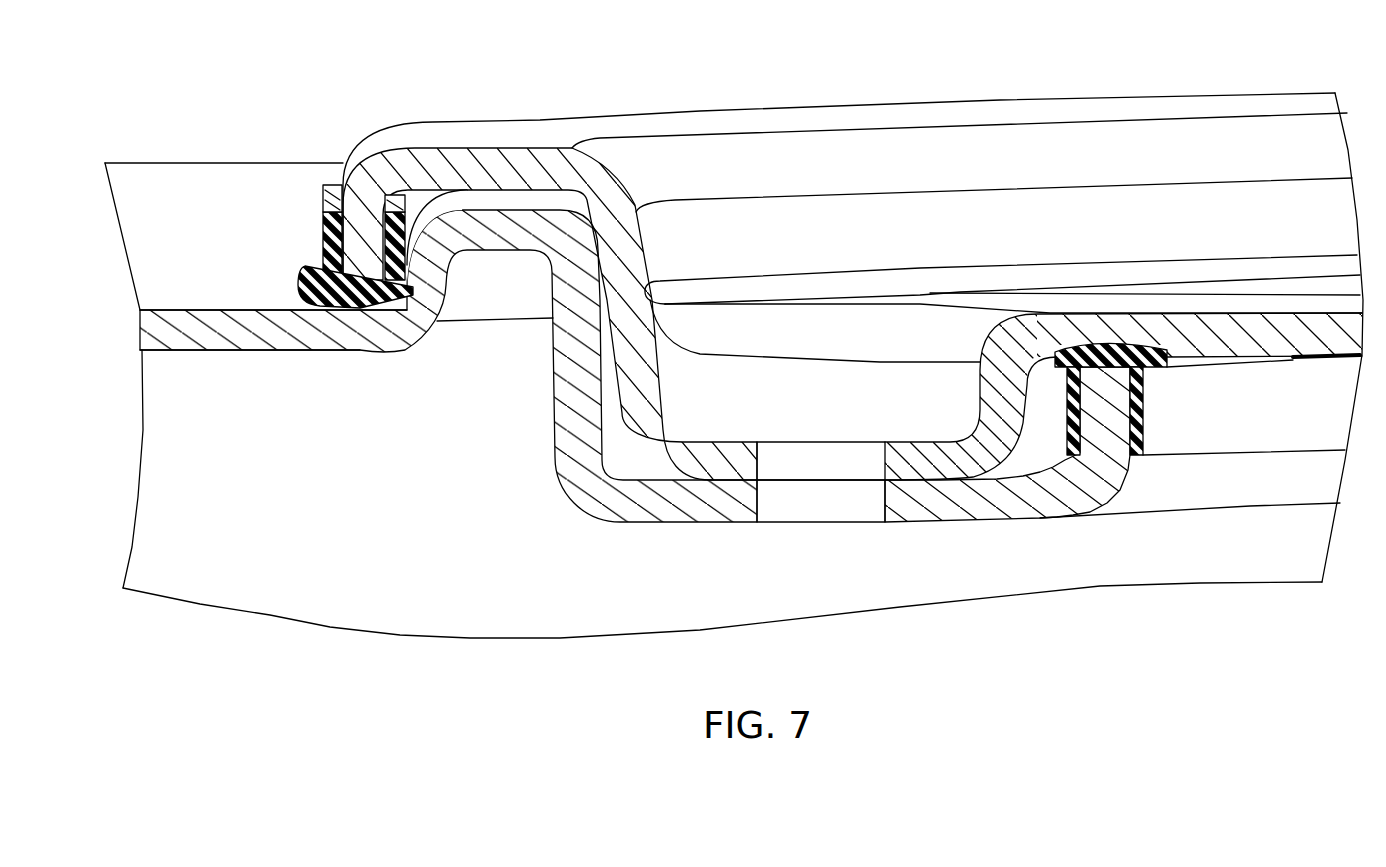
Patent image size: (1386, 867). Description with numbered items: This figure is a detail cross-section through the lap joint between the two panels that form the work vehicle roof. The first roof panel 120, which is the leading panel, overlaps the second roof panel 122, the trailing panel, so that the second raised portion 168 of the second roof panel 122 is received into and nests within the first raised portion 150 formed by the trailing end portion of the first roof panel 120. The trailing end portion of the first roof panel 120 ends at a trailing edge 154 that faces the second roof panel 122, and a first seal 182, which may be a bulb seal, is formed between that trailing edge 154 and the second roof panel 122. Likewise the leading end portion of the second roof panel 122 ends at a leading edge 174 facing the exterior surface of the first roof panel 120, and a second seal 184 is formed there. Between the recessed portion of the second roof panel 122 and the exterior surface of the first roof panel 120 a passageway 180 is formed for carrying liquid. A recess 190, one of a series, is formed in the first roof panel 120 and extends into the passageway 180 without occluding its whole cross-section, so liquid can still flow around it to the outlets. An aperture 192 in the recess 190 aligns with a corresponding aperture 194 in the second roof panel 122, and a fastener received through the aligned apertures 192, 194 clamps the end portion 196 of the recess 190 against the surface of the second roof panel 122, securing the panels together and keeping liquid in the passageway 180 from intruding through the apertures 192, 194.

The first roof panel 120 is at (1160, 108).
The second roof panel 122 is at (218, 310).
The first raised portion 150 is at (485, 148).
The trailing edge 154 is at (350, 290).
The second raised portion 168 is at (503, 233).
The leading edge 174 is at (1115, 360).
The passageway 180 is at (1043, 435).
The first seal 182 is at (330, 278).
The second seal 184 is at (1163, 358).
The recess 190 is at (900, 402).
The aperture 192 is at (834, 463).
The aperture 194 is at (830, 493).
The end portion 196 is at (933, 482).